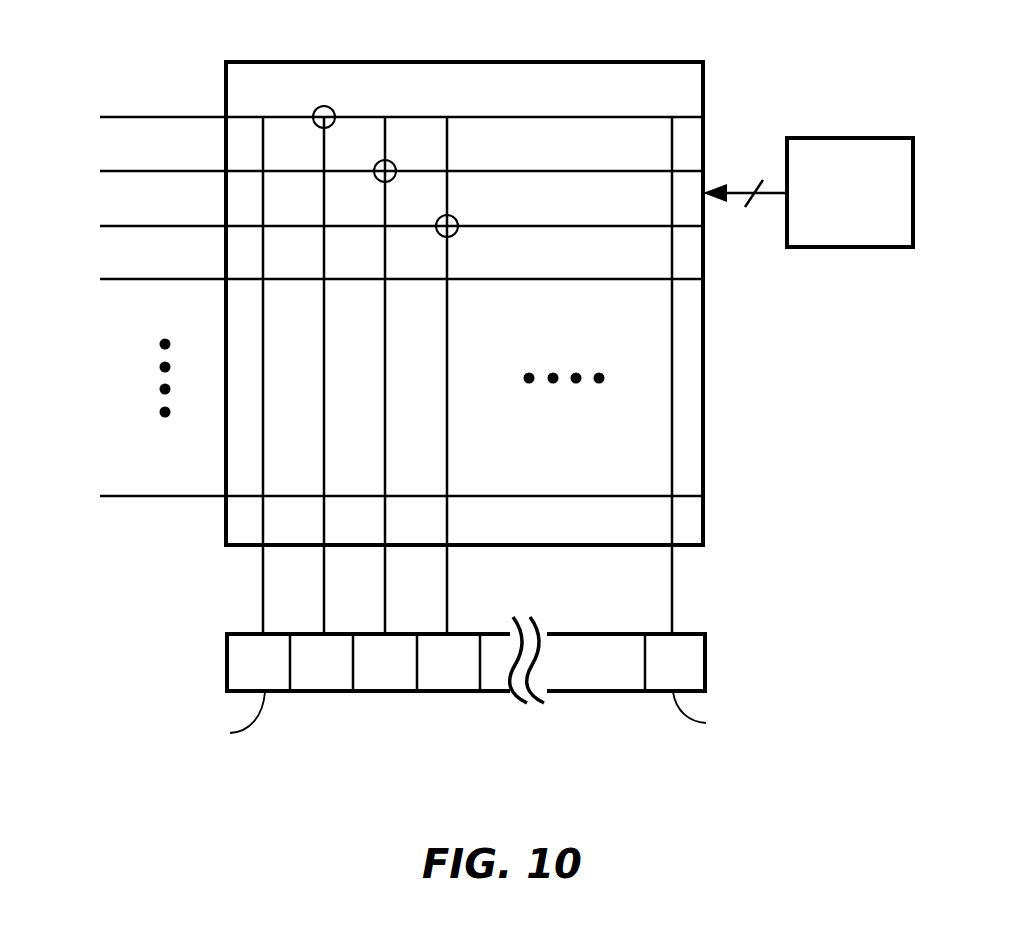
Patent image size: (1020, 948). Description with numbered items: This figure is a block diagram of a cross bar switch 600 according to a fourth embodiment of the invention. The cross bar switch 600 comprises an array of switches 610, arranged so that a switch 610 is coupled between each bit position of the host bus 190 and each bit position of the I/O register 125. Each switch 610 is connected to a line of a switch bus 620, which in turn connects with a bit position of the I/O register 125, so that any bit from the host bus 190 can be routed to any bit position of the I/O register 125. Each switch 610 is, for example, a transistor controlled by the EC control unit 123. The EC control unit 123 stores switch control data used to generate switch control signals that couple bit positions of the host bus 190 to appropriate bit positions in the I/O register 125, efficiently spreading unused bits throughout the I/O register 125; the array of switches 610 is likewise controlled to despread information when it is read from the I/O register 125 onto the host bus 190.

The cross bar switch 600 is at (592, 61).
The switch 610 is at (447, 215).
The switch bus 620 is at (220, 591).
The host bus 190 is at (117, 201).
The I/O register 125 is at (445, 692).
The EC control unit 123 is at (877, 137).